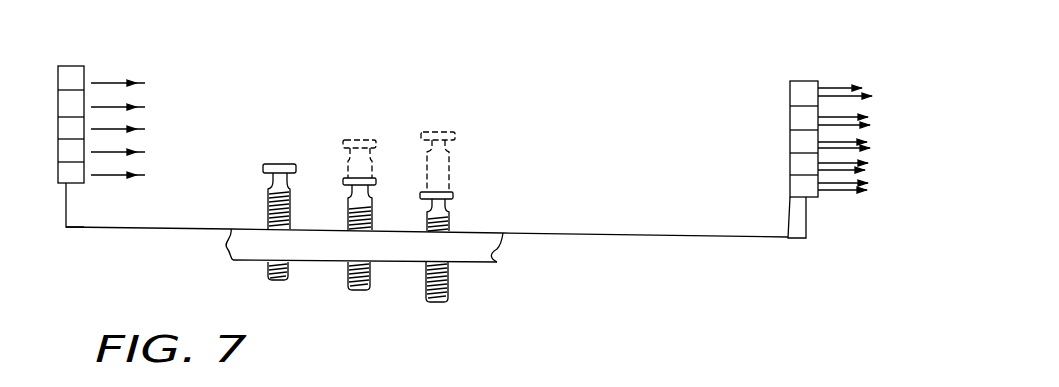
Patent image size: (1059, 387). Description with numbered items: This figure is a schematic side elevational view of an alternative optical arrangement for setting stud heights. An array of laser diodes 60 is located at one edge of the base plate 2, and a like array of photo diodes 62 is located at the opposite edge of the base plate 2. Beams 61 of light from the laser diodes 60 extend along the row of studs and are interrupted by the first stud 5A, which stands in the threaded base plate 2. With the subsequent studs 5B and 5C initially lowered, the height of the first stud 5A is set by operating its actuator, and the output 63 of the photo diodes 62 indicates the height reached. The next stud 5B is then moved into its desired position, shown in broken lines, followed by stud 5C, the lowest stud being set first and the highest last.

The base plate 2 is at (499, 252).
The first stud 5A is at (288, 274).
The second stud 5B is at (370, 277).
The third stud 5C is at (448, 288).
The array of laser diodes 60 is at (68, 105).
The beams of light 61 is at (115, 82).
The array of photo diodes 62 is at (798, 118).
The output of the photo diodes 63 is at (837, 85).